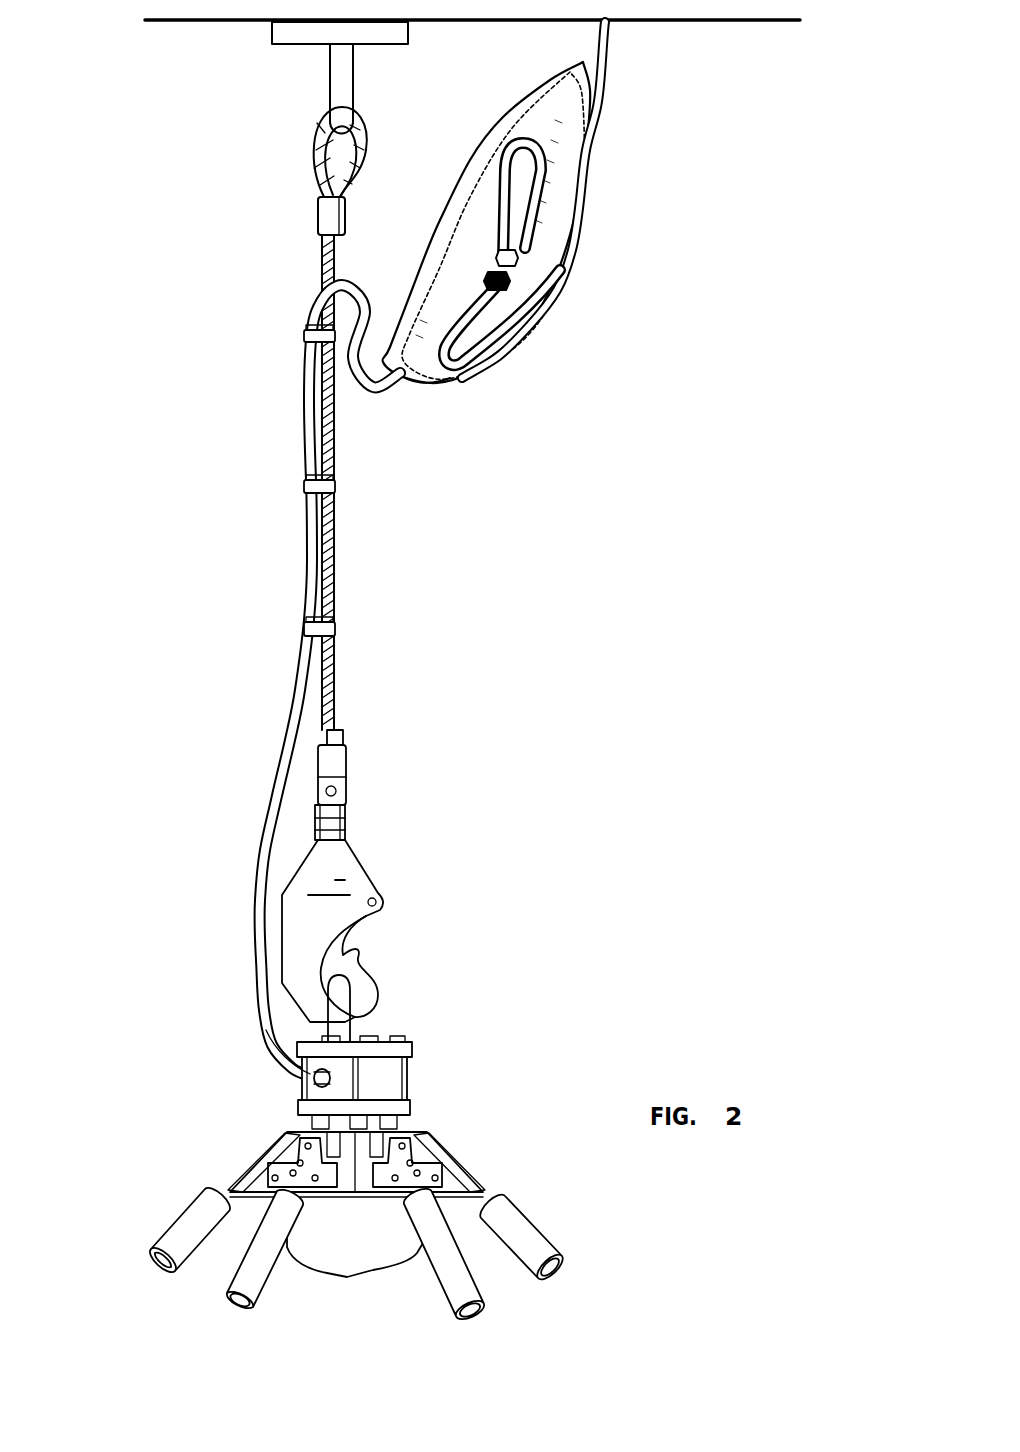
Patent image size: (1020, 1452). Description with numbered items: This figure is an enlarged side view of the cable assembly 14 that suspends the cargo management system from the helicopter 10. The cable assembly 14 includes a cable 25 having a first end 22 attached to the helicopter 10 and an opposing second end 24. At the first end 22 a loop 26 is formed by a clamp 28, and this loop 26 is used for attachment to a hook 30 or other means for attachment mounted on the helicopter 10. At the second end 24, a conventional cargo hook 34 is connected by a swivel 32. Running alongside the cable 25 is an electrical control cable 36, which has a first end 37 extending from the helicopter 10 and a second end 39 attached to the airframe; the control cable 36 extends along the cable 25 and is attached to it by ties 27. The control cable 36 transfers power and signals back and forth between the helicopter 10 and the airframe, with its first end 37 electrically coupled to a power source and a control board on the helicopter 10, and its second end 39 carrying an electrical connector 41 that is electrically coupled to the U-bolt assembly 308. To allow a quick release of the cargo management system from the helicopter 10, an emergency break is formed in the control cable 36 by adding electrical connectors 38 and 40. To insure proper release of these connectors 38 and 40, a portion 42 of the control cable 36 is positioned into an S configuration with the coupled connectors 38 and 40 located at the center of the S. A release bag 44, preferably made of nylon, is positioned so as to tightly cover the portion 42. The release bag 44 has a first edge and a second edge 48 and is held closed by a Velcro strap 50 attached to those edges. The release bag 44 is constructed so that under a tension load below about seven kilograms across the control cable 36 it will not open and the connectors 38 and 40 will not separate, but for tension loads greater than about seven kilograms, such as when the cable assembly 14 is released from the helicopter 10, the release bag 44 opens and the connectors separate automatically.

The helicopter 10 is at (730, 22).
The cable assembly 14 is at (524, 655).
The first end 22 is at (357, 153).
The second end 24 is at (343, 763).
The cable 25 is at (330, 557).
The loop 26 is at (317, 123).
The ties 27 is at (310, 488).
The clamp 28 is at (322, 217).
The hook 30 is at (345, 82).
The swivel 32 is at (345, 815).
The cargo hook 34 is at (292, 928).
The electrical control cable 36 is at (282, 793).
The first end 37 is at (613, 47).
The electrical connector 38 is at (505, 285).
The second end 39 is at (265, 1042).
The electrical connector 40 is at (518, 252).
The electrical connector 41 is at (298, 1107).
The portion 42 is at (692, 154).
The release bag 44 is at (495, 360).
The second edge 48 is at (585, 183).
The Velcro strap 50 is at (433, 383).
The U-bolt assembly 308 is at (393, 1080).